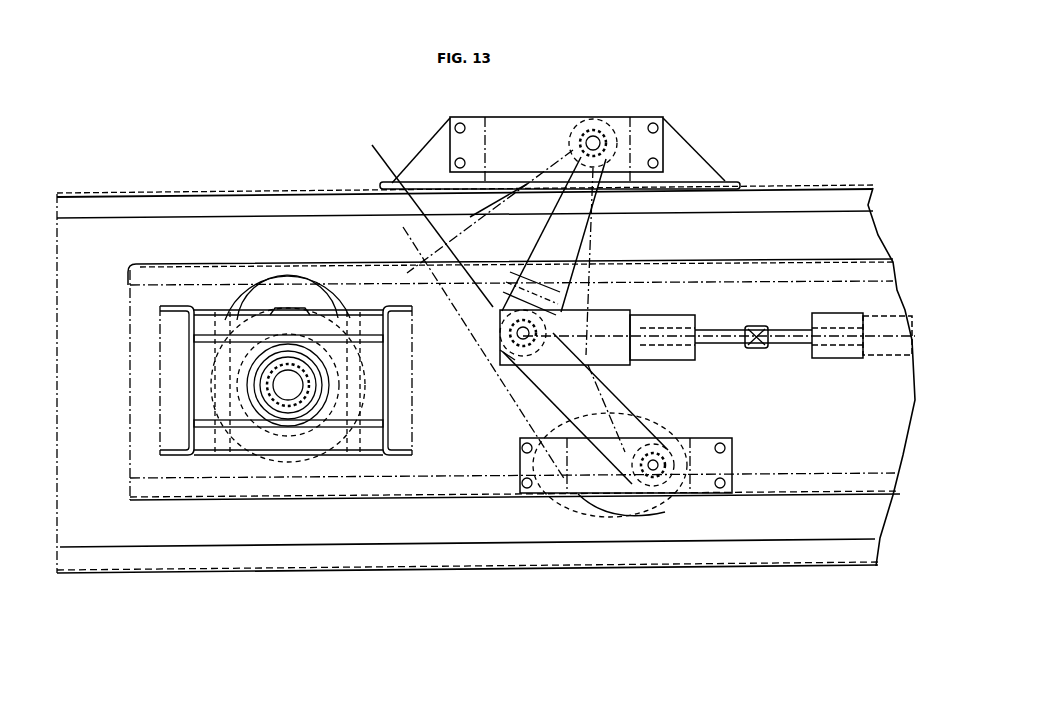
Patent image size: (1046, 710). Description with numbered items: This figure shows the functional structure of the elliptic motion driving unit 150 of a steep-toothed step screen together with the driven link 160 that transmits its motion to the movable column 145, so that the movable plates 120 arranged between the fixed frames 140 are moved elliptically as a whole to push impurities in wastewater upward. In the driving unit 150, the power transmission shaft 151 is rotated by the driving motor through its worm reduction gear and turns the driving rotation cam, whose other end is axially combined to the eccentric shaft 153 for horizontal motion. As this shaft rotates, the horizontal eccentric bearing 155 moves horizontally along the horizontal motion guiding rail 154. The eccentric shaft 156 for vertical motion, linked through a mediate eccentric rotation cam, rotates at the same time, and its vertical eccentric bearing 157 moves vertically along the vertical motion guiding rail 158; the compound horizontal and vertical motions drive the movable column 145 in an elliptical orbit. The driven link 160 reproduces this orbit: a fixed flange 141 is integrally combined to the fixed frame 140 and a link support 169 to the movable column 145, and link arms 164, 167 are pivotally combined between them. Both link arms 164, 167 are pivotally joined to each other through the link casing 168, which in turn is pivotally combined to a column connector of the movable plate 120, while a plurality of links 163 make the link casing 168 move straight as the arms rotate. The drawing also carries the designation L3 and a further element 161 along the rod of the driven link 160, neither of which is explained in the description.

The movable plate 120 is at (423, 500).
The fixed frame 140 is at (238, 202).
The movable column 145 is at (148, 276).
The elliptic motion driving unit 150 is at (195, 236).
The power transmission shaft 151 is at (250, 385).
The eccentric shaft for horizontal motion 153 is at (292, 327).
The horizontal motion guiding rail 154 is at (347, 405).
The horizontal eccentric bearing 155 is at (260, 283).
The eccentric shaft for vertical motion 156 is at (287, 403).
The vertical eccentric bearing 157 is at (297, 405).
The vertical motion guiding rail 158 is at (333, 433).
The fixed flange 141 is at (690, 163).
The line L3 is at (466, 302).
The link arm 167 is at (573, 240).
The link casing 168 is at (593, 320).
The driven link 160 is at (657, 300).
The turnbuckle 161 is at (787, 337).
The links 163 is at (485, 388).
The link arm 164 is at (623, 413).
The link support 169 is at (698, 480).